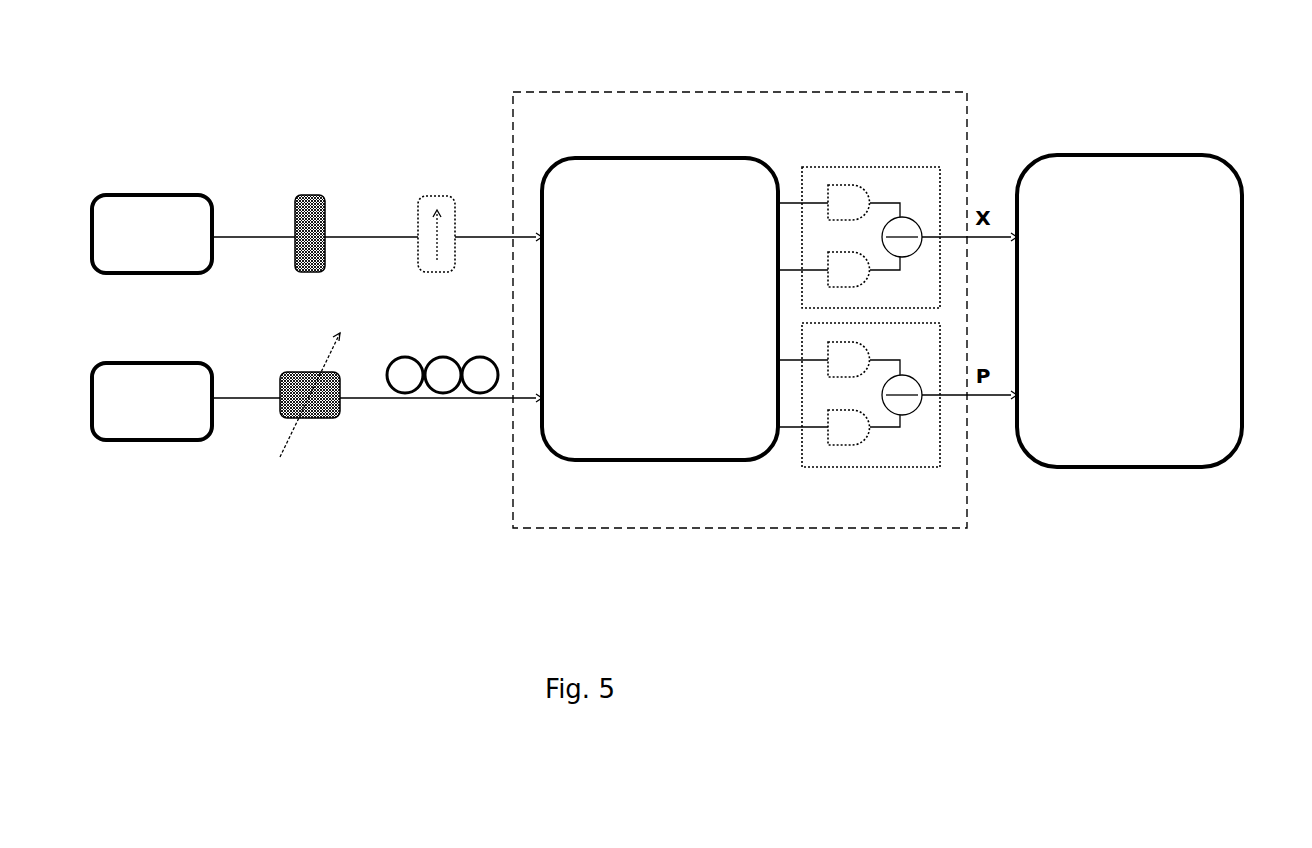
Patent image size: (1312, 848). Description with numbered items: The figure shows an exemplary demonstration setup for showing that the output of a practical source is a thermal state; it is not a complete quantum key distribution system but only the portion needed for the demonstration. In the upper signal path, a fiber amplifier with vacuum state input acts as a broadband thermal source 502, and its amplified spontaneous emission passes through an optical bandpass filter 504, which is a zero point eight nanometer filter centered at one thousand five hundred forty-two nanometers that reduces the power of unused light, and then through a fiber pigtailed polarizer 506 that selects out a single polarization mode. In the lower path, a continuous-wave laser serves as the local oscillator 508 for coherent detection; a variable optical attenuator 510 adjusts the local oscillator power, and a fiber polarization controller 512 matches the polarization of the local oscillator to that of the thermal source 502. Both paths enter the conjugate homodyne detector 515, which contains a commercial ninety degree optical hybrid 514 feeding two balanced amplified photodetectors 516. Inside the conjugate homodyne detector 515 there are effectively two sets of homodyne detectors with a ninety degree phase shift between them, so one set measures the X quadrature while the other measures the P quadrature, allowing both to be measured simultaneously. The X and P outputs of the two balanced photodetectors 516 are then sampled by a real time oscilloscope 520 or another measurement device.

The broadband thermal source 502 is at (90, 211).
The optical bandpass filter 504 is at (325, 255).
The fiber pigtailed polarizer 506 is at (455, 258).
The local oscillator 508 is at (90, 380).
The variable optical attenuator 510 is at (340, 410).
The fiber polarization controller 512 is at (463, 398).
The 90° optical hybrid 514 is at (596, 158).
The conjugate homodyne detector 515 is at (730, 92).
The balanced amplified photodetectors 516 is at (915, 167).
The real time oscilloscope 520 is at (1242, 198).